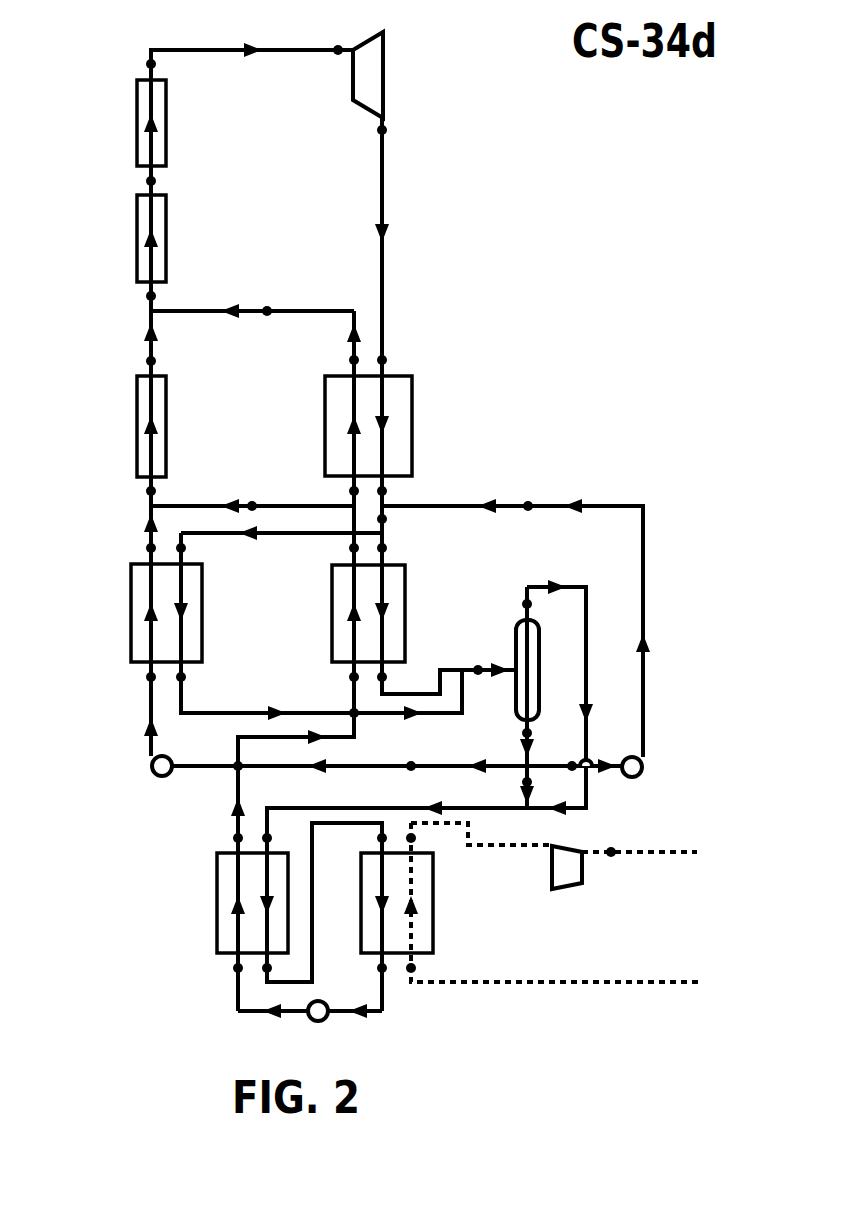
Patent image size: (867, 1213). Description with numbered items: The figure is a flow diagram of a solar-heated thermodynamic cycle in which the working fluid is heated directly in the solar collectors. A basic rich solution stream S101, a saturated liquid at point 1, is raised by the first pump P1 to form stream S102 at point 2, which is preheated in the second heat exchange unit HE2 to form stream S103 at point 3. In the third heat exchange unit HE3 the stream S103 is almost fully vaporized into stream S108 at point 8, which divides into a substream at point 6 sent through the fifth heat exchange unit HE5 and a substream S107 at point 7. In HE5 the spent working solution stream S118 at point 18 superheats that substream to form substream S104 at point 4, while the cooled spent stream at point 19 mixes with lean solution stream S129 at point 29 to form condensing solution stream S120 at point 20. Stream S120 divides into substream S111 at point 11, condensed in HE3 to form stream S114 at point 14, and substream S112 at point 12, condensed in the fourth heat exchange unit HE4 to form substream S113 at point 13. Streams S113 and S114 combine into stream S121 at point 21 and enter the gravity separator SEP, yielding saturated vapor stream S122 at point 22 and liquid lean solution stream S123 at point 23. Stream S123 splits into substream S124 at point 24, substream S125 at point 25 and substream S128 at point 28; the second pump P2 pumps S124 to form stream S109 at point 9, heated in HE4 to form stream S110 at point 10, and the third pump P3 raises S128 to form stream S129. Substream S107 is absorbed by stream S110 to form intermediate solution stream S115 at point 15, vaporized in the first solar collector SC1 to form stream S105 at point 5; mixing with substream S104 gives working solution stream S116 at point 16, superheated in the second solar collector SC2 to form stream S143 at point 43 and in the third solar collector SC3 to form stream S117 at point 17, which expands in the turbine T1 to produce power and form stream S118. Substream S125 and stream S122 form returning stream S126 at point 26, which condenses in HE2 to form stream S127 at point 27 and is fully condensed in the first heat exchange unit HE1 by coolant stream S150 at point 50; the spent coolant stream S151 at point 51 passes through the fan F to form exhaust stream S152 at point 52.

The turbine T1 is at (388, 75).
The first solar collector SC1 is at (127, 426).
The second solar collector SC2 is at (127, 238).
The third solar collector SC3 is at (127, 123).
The first heat exchange unit HE1 is at (423, 903).
The second heat exchange unit HE2 is at (229, 903).
The third heat exchange unit HE3 is at (394, 613).
The fourth heat exchange unit HE4 is at (142, 613).
The fifth heat exchange unit HE5 is at (394, 426).
The first pump P1 is at (318, 1027).
The second pump P2 is at (145, 767).
The third pump P3 is at (652, 768).
The fan F is at (567, 867).
The separator SEP is at (527, 670).
The point 1 is at (372, 968).
The point 2 is at (227, 968).
The point 3 is at (286, 758).
The point 4 is at (267, 301).
The point 5 is at (160, 360).
The point 6 is at (342, 491).
The point 7 is at (252, 496).
The point 8 is at (342, 548).
The point 9 is at (140, 677).
The point 10 is at (136, 548).
The point 11 is at (397, 548).
The point 12 is at (196, 548).
The point 13 is at (196, 677).
The point 14 is at (397, 677).
The point 15 is at (166, 490).
The point 16 is at (166, 295).
The point 17 is at (234, 50).
The point 18 is at (384, 245).
The point 19 is at (397, 491).
The point 20 is at (397, 519).
The point 21 is at (480, 682).
The point 22 is at (542, 604).
The point 23 is at (514, 733).
The point 24 is at (412, 755).
The point 25 is at (514, 782).
The point 26 is at (282, 838).
The point 27 is at (324, 903).
The point 28 is at (573, 777).
The point 29 is at (529, 516).
The point 43 is at (137, 181).
The point 50 is at (426, 968).
The point 51 is at (426, 838).
The point 52 is at (612, 863).
The basic rich solution stream S101 is at (383, 1018).
The higher pressure basic rich solution stream S102 is at (235, 990).
The pre-heated basic rich solution stream S103 is at (233, 780).
The superheated substream S104 is at (290, 311).
The heated intermediate solution stream S105 is at (140, 352).
The second vaporized basic rich solution substream S107 is at (196, 504).
The vaporized basic rich solution stream S108 is at (345, 562).
The higher pressure lean solution substream S109 is at (149, 690).
The heated upcoming lean solution stream S110 is at (140, 535).
The first condensing solution substream S111 is at (395, 562).
The second condensing solution substream S112 is at (270, 536).
The cooled second condensing solution substream S113 is at (340, 505).
The cooled first condensing solution stream S114 is at (395, 662).
The intermediate solution stream S115 is at (140, 504).
The working solution stream S116 is at (140, 298).
The superheated working solution stream S117 is at (280, 52).
The spent working solution stream S118 is at (384, 165).
The condensing solution stream S120 is at (384, 520).
The combined cooled condensing solution stream S121 is at (495, 668).
The saturated vapor stream S122 is at (587, 650).
The saturated liquid lean solution stream S123 is at (510, 765).
The first lean solution substream S124 is at (365, 768).
The second lean solution substream S125 is at (525, 806).
The returning basic rich solution stream S126 is at (372, 806).
The partially condensed basic rich solution stream S127 is at (313, 880).
The third lean solution substream S128 is at (542, 760).
The higher pressure lean solution stream S129 is at (641, 570).
The superheated working solution stream S143 is at (138, 183).
The coolant stream S150 is at (530, 985).
The spent coolant stream S151 is at (480, 847).
The exhaust coolant stream S152 is at (635, 856).